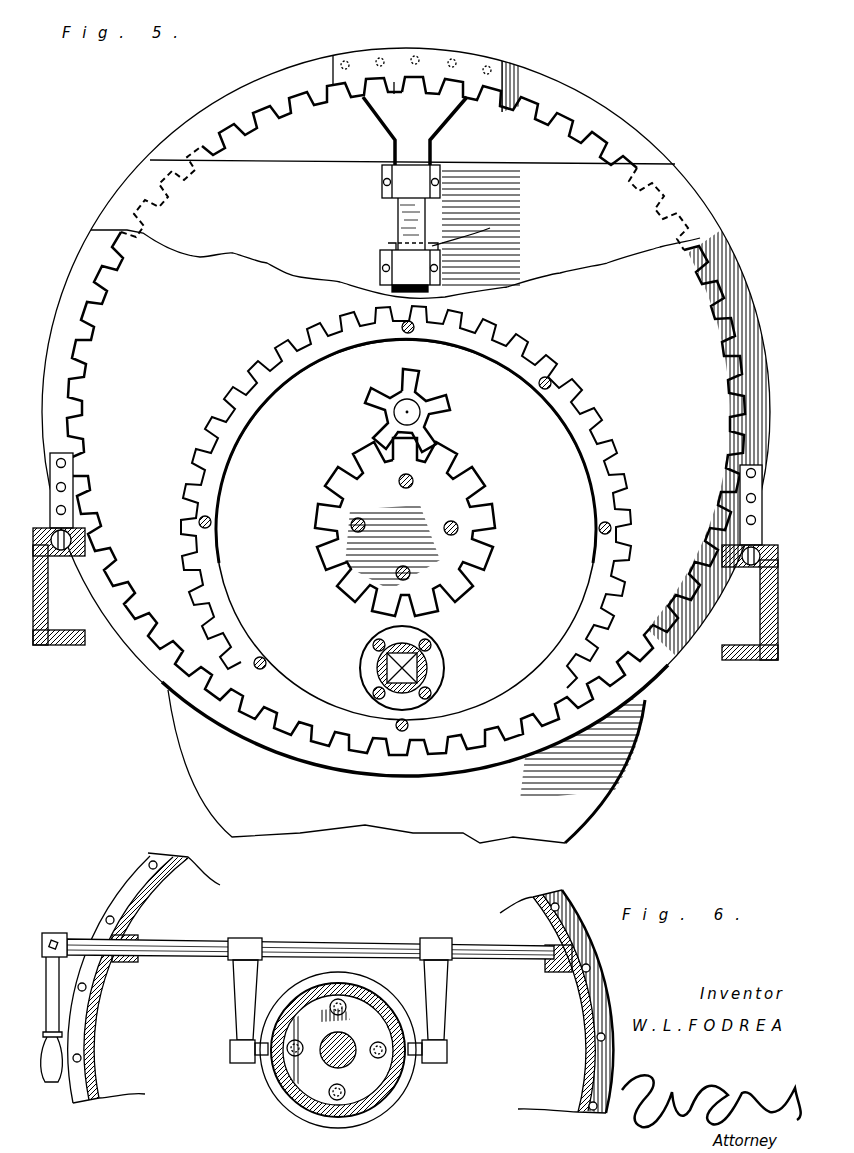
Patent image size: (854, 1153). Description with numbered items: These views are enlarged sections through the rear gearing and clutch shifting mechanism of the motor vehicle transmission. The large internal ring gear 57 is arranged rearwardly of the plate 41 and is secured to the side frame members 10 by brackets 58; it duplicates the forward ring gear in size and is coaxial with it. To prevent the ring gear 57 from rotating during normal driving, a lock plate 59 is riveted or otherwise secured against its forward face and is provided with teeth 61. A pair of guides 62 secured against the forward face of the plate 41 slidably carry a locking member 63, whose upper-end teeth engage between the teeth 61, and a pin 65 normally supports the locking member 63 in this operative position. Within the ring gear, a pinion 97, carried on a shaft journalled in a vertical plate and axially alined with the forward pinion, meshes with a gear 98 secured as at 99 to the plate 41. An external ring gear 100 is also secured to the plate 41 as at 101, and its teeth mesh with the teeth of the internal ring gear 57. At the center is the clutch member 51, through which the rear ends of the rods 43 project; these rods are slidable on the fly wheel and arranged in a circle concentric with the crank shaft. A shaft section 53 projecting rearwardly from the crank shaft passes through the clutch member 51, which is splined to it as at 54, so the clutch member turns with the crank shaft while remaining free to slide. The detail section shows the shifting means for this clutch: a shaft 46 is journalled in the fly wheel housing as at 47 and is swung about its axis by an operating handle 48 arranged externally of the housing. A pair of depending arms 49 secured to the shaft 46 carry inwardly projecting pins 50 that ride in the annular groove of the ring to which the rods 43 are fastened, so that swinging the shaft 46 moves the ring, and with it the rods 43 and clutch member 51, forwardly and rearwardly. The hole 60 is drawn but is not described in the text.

In FIG. 5, the side frame members 10 is at (62, 648).
In FIG. 5, the plate 41 is at (395, 229).
In FIG. 5, the rods 43 is at (373, 640).
In FIG. 6, the shaft 46 is at (341, 943).
In FIG. 6, the journal 47 is at (138, 945).
In FIG. 6, the operating handle 48 is at (46, 1003).
In FIG. 6, the depending arms 49 is at (238, 990).
In FIG. 6, the pins 50 is at (262, 1058).
In FIG. 5, the clutch member 51 is at (378, 670).
In FIG. 5, the shaft section 53 is at (431, 642).
In FIG. 5, the spline 54 is at (420, 666).
In FIG. 5, the internal ring gear 57 is at (607, 109).
In FIG. 5, the brackets 58 is at (42, 526).
In FIG. 5, the lock plate 59 is at (481, 64).
In FIG. 5, the hole 60 is at (453, 58).
In FIG. 5, the teeth 61 is at (393, 82).
In FIG. 5, the guides 62 is at (382, 182).
In FIG. 5, the locking member 63 is at (398, 218).
In FIG. 5, the pin 65 is at (473, 231).
In FIG. 5, the pinion 97 is at (450, 410).
In FIG. 5, the gear 98 is at (492, 515).
In FIG. 5, the securing means 99 is at (459, 531).
In FIG. 5, the external ring gear 100 is at (574, 382).
In FIG. 5, the securing means 101 is at (418, 322).